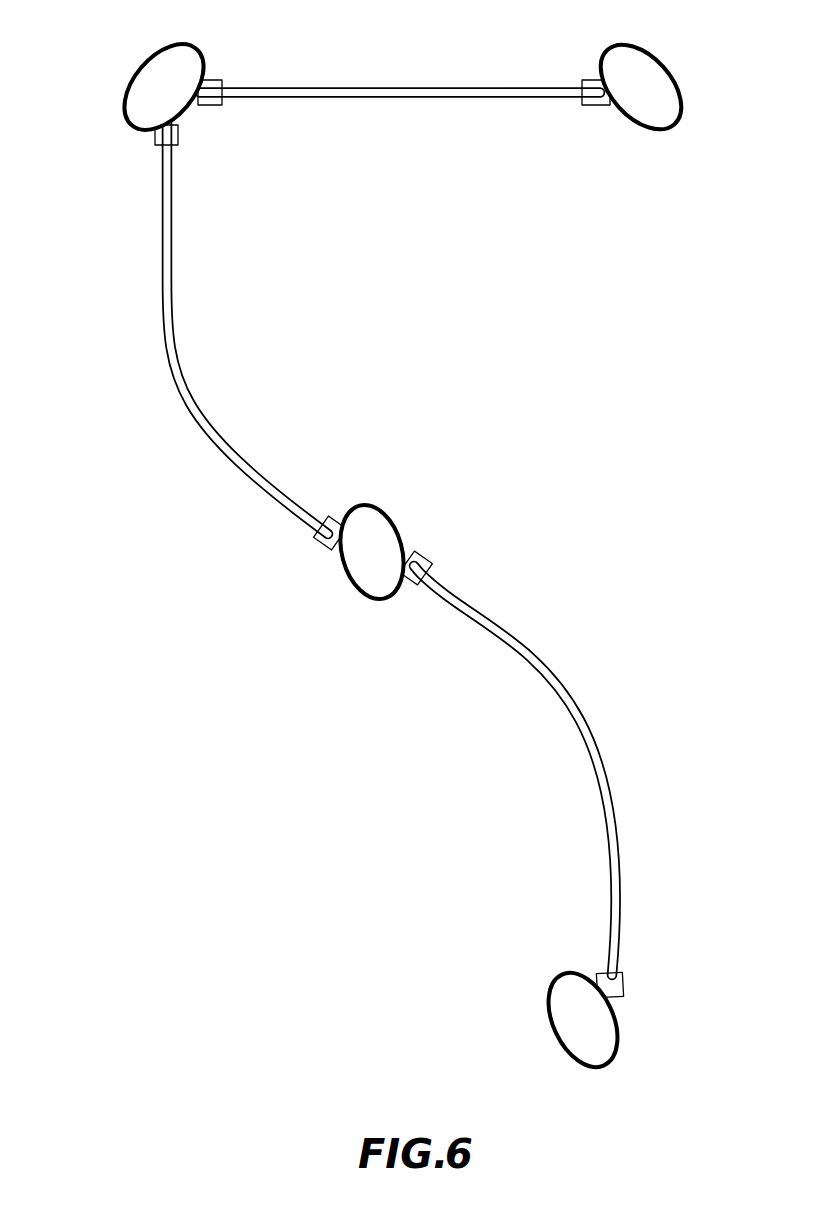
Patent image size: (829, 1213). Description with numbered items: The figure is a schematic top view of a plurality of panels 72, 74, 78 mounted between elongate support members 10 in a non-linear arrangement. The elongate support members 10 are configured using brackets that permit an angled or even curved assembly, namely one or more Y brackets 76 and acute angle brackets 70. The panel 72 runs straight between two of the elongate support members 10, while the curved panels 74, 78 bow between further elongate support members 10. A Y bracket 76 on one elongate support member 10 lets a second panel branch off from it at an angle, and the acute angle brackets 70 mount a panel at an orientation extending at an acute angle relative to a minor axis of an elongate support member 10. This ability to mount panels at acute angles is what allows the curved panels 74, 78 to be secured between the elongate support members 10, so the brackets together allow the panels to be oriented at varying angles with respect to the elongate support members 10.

The elongate support member 10 is at (162, 67).
The acute angle bracket 70 is at (597, 105).
The panel 72 is at (409, 88).
The curved panel 74 is at (178, 365).
The Y bracket 76 is at (178, 140).
The curved panel 78 is at (597, 752).